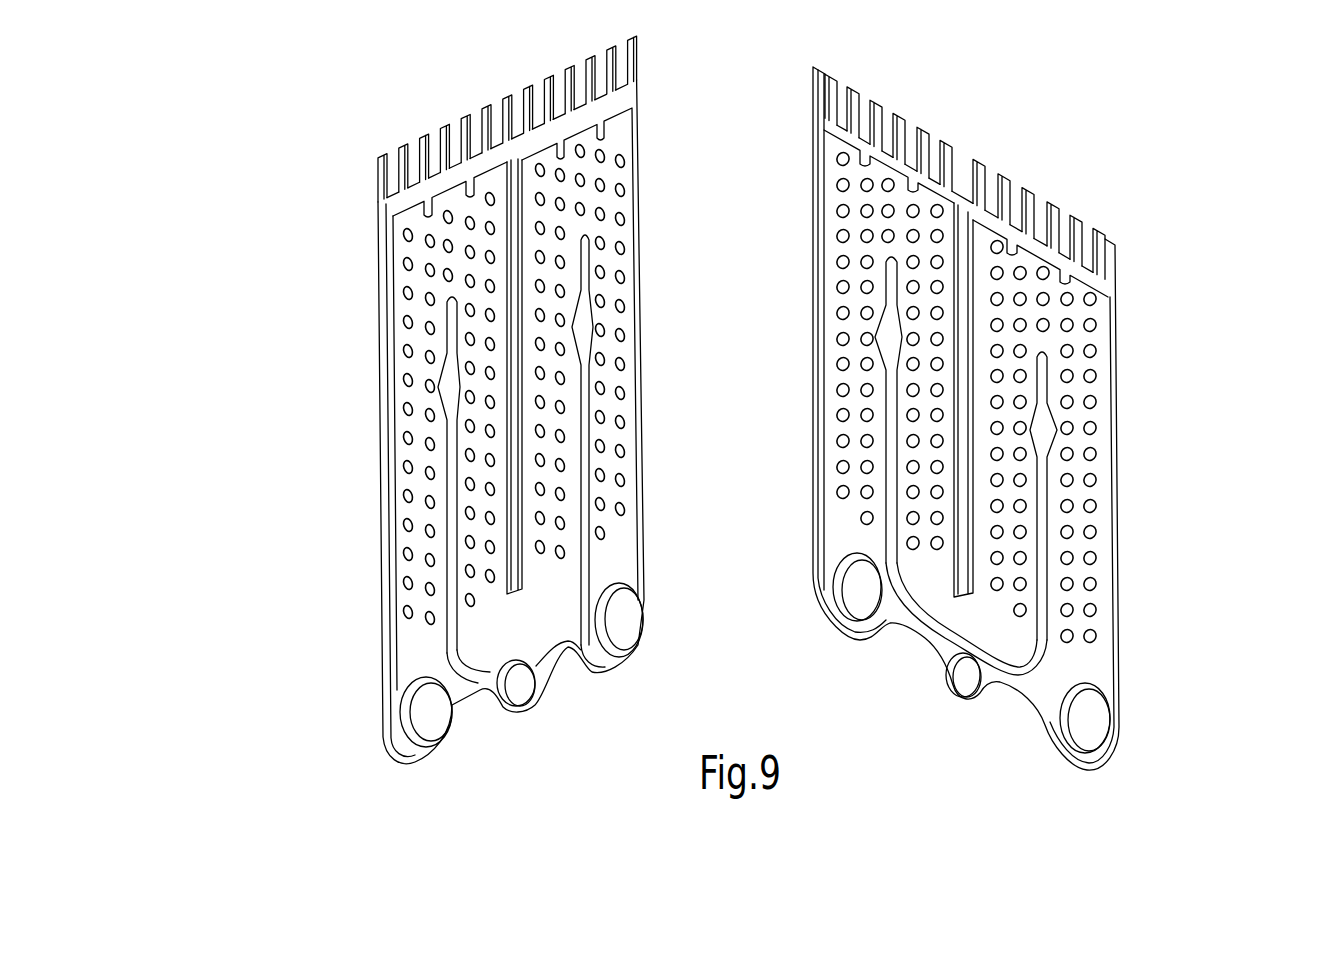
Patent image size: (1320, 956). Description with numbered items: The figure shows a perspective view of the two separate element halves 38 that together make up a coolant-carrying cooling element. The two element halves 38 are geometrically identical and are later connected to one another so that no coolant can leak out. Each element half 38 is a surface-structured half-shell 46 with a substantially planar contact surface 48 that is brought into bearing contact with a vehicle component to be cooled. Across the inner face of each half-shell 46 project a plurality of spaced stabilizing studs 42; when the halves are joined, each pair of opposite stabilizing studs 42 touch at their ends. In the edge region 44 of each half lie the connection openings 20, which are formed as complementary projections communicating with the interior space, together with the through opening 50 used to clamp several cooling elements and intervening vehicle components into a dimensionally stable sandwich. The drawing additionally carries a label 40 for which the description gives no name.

The connection openings 20 is at (430, 728).
The element halves 38 is at (392, 395).
The flow channel 40 is at (935, 432).
The stabilizing studs 42 is at (860, 243).
The edge region 44 is at (352, 750).
The half-shells 46 is at (533, 610).
The contact surface 48 is at (625, 148).
The through opening 50 is at (512, 688).